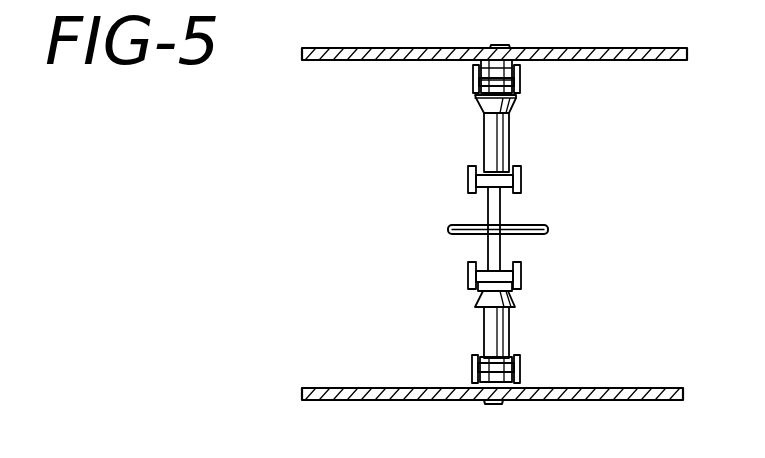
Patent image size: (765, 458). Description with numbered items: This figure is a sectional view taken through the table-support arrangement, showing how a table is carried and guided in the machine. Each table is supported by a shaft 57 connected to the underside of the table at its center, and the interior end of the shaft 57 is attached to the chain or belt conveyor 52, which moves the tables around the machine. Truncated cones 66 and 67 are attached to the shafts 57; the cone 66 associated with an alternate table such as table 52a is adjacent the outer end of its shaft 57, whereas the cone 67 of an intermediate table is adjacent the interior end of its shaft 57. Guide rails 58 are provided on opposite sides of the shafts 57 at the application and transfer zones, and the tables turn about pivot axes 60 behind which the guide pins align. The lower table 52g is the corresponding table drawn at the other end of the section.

The table 52a is at (363, 48).
The lower plate 52g is at (341, 388).
The pivot axis 60 is at (500, 45).
The guide rails 58 is at (474, 80).
The truncated cone 66 is at (478, 104).
The truncated cone 67 is at (480, 305).
The shaft 57 is at (509, 146).
The chain or belt conveyor 52 is at (501, 205).